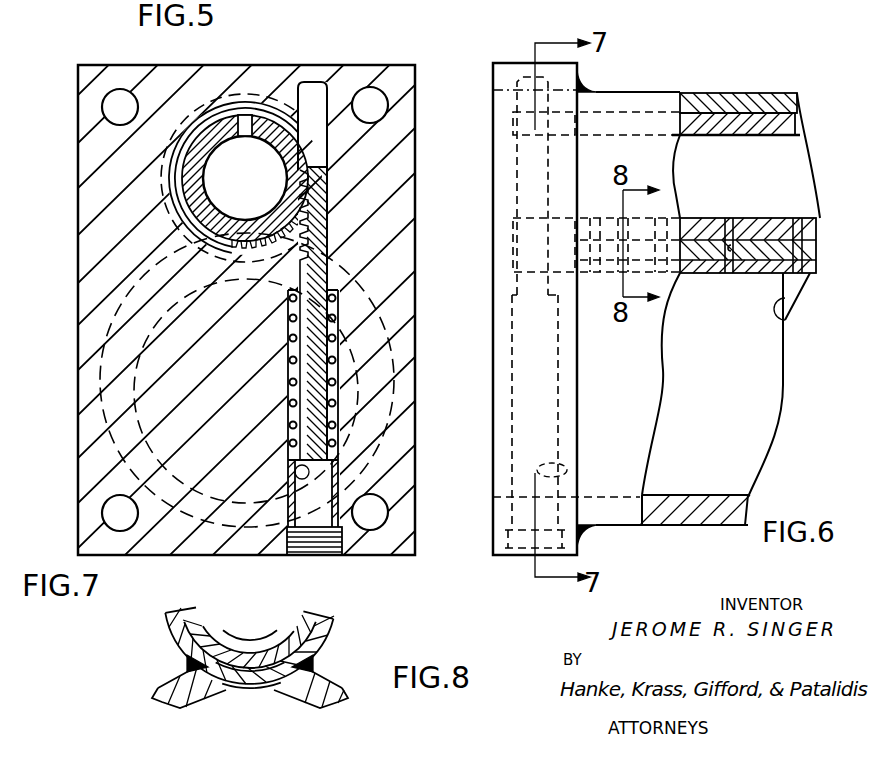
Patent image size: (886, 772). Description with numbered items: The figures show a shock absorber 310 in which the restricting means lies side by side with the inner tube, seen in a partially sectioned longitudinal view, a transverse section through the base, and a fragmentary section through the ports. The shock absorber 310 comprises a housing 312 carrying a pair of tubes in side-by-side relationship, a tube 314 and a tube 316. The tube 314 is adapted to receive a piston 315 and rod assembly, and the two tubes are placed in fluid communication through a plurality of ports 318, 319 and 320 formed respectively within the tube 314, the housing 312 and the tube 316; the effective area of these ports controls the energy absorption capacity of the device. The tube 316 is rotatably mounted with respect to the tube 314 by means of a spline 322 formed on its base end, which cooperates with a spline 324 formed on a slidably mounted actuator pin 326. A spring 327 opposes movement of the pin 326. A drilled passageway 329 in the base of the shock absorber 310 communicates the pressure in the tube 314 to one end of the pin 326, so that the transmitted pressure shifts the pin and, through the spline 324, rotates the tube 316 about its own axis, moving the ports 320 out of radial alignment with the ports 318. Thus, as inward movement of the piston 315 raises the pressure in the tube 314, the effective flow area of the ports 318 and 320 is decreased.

In FIG. 6, the shock absorber 310 is at (700, 79).
In FIG. 6, the housing 312 is at (795, 102).
In FIG. 8, the housing 312 is at (318, 630).
In FIG. 6, the tube 314 is at (693, 516).
In FIG. 8, the tube 314 is at (315, 690).
In FIG. 6, the piston 315 is at (785, 320).
In FIG. 6, the tube 316 is at (793, 129).
In FIG. 8, the tube 316 is at (303, 610).
In FIG. 6, the ports 318 is at (766, 325).
In FIG. 8, the ports 318 is at (255, 675).
In FIG. 6, the ports 319 is at (735, 242).
In FIG. 8, the ports 319 is at (234, 683).
In FIG. 6, the ports 320 is at (727, 247).
In FIG. 8, the ports 320 is at (248, 638).
In FIG. 7, the spline 322 is at (258, 252).
In FIG. 7, the spline 324 is at (312, 258).
In FIG. 7, the actuator pin 326 is at (309, 297).
In FIG. 7, the spring 327 is at (339, 322).
In FIG. 7, the drilled passageway 329 is at (296, 470).
In FIG. 6, the drilled passageway 329 is at (568, 475).